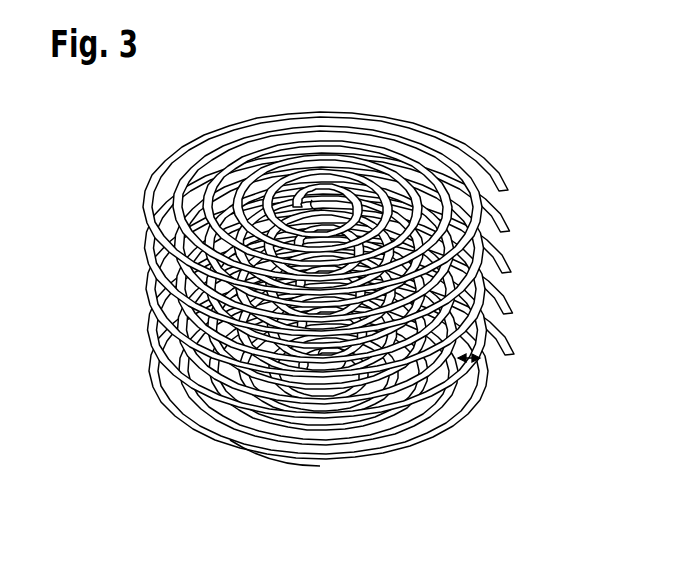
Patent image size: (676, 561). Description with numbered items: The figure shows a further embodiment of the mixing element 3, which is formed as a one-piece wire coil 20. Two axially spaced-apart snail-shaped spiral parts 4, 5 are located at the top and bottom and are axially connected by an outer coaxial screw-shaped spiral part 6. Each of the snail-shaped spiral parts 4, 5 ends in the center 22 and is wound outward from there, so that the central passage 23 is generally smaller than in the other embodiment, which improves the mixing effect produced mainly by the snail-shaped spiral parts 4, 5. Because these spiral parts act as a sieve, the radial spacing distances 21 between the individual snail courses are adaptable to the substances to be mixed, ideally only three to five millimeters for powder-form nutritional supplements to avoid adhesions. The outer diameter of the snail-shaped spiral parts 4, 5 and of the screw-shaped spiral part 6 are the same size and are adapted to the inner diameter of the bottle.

The mixing element 3 is at (290, 294).
The snail-shaped spiral part 4 is at (330, 175).
The snail-shaped spiral part 5 is at (288, 404).
The outer coaxial screw-shaped spiral part 6 is at (150, 300).
The one-piece wire coil 20 is at (270, 463).
The radial spacing distances 21 is at (470, 362).
The center 22 is at (314, 202).
The central passage 23 is at (345, 368).